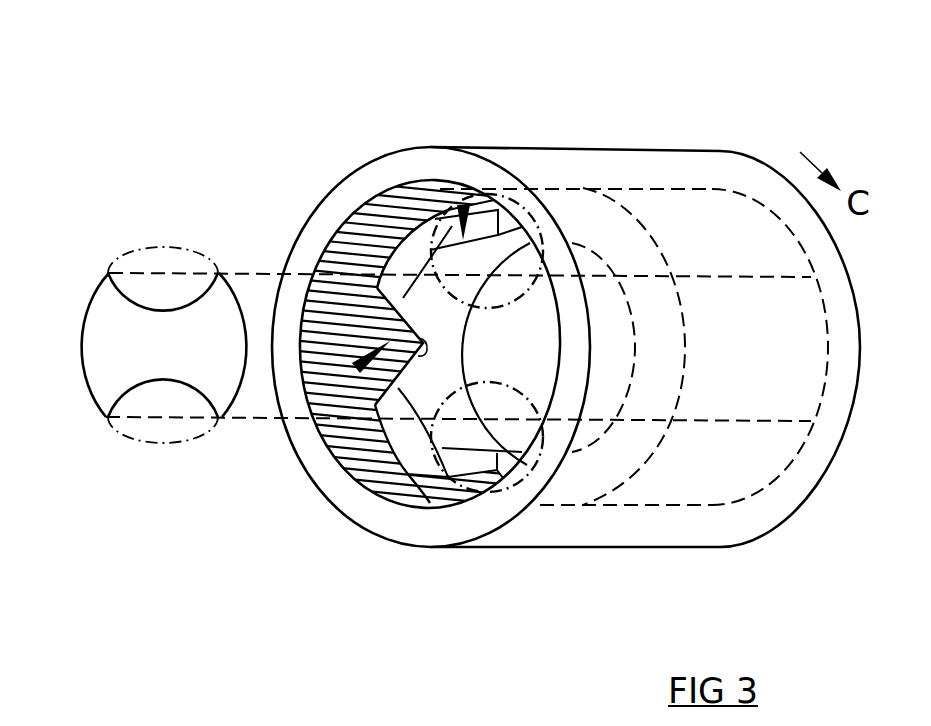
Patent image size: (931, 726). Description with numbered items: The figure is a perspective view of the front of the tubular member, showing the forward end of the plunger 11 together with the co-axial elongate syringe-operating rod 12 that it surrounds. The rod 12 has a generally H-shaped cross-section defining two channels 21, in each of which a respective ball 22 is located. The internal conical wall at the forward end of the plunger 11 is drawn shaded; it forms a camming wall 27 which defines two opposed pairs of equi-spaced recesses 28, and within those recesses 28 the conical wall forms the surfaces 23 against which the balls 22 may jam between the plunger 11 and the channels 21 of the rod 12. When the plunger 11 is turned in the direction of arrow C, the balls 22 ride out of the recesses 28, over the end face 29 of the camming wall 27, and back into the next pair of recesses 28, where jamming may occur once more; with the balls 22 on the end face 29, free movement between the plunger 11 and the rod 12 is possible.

The plunger 11 is at (625, 528).
The syringe-operating rod 12 is at (107, 377).
The channels 21 is at (130, 298).
The balls 22 is at (497, 190).
The conical surfaces 23 is at (332, 312).
The camming wall 27 is at (418, 360).
The recesses 28 is at (463, 205).
The end face 29 is at (410, 257).